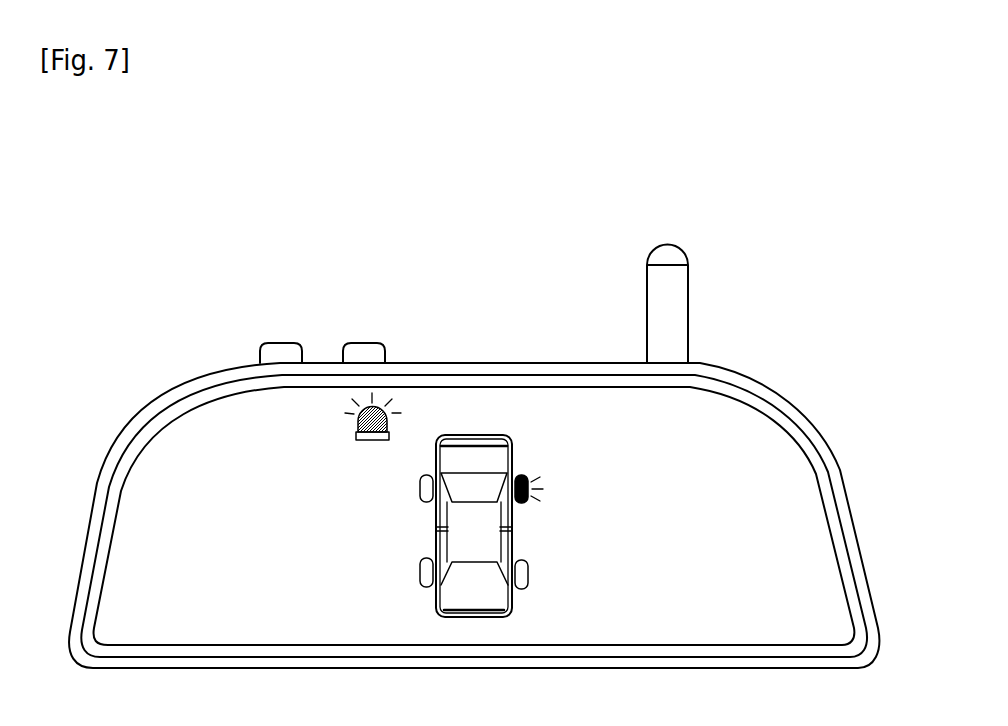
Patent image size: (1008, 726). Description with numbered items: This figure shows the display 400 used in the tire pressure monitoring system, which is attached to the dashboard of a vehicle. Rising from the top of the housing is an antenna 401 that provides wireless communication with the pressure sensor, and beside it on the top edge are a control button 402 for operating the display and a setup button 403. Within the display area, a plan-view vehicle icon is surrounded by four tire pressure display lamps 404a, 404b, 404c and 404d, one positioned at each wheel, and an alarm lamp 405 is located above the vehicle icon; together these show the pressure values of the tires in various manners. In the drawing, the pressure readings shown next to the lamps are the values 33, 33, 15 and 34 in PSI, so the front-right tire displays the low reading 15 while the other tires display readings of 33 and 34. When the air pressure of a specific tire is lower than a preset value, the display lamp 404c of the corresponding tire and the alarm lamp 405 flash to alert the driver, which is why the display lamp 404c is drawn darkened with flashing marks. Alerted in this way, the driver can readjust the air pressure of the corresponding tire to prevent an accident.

The display 400 is at (512, 127).
The antenna 401 is at (683, 305).
The control button 402 is at (280, 342).
The setup button 403 is at (363, 342).
The alarm lamp 405 is at (393, 408).
The tire pressure display lamp 404a is at (427, 498).
The tire pressure display lamp 404b is at (427, 588).
The tire pressure display lamp 404c is at (527, 500).
The tire pressure display lamp 404d is at (527, 588).
The tire pressure value (PSI) 33 is at (363, 529).
The low tire pressure value (PSI) 15 is at (591, 488).
The tire pressure value (PSI) 34 is at (591, 573).